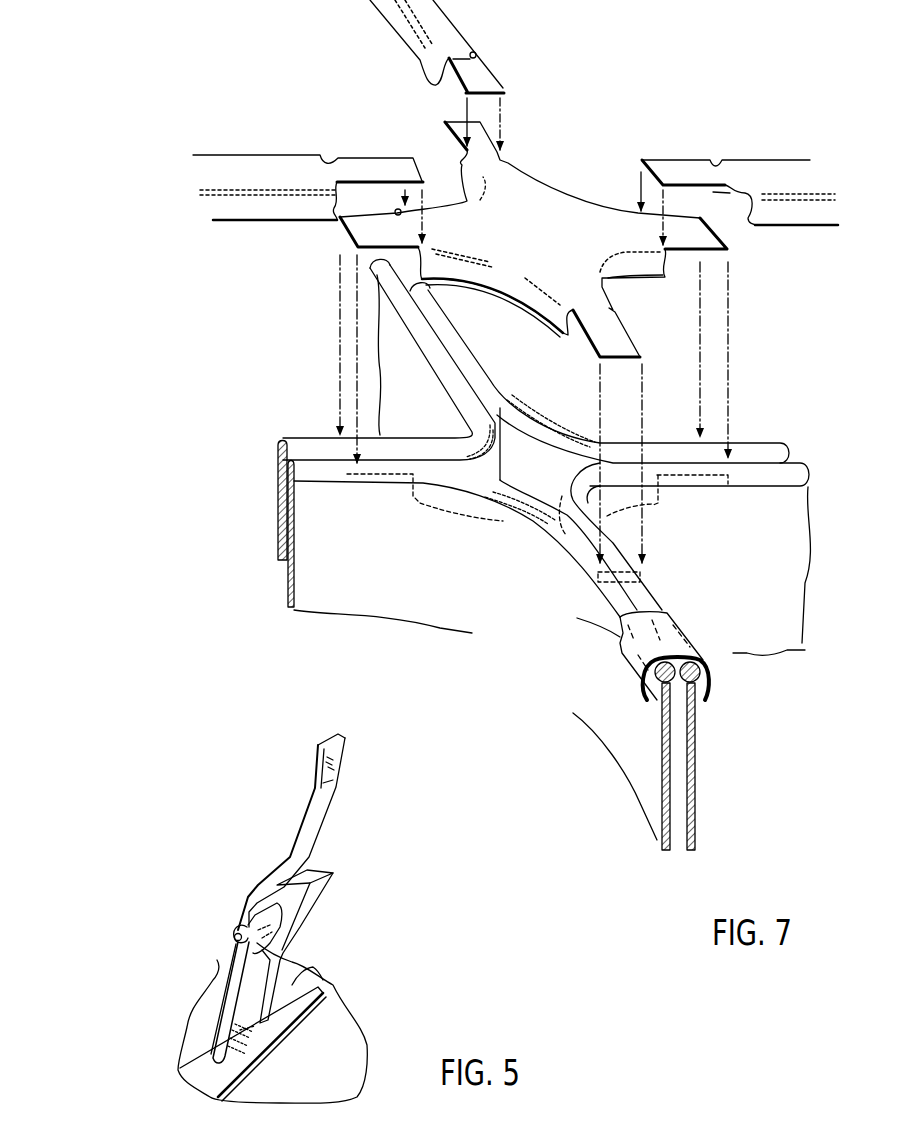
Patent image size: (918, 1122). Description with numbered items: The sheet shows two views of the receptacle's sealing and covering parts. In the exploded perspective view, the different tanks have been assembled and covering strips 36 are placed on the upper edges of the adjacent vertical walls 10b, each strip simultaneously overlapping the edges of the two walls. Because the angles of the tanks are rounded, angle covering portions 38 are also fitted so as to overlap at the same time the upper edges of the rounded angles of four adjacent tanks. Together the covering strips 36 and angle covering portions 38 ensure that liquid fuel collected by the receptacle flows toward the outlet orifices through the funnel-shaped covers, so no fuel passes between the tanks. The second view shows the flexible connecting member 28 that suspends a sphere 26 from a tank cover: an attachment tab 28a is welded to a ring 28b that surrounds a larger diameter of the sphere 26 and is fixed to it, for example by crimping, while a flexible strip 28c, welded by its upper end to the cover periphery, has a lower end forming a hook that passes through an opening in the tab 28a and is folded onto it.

In FIG. 7, the vertical wall 10b is at (323, 523).
In FIG. 7, the covering strip 36 is at (412, 60).
In FIG. 7, the angle covering portion 38 is at (527, 187).
In FIG. 5, the sphere 26 is at (333, 1023).
In FIG. 5, the connecting member 28 is at (293, 897).
In FIG. 5, the attachment tab 28a is at (252, 985).
In FIG. 5, the ring 28b is at (293, 985).
In FIG. 5, the flexible strip 28c is at (307, 817).